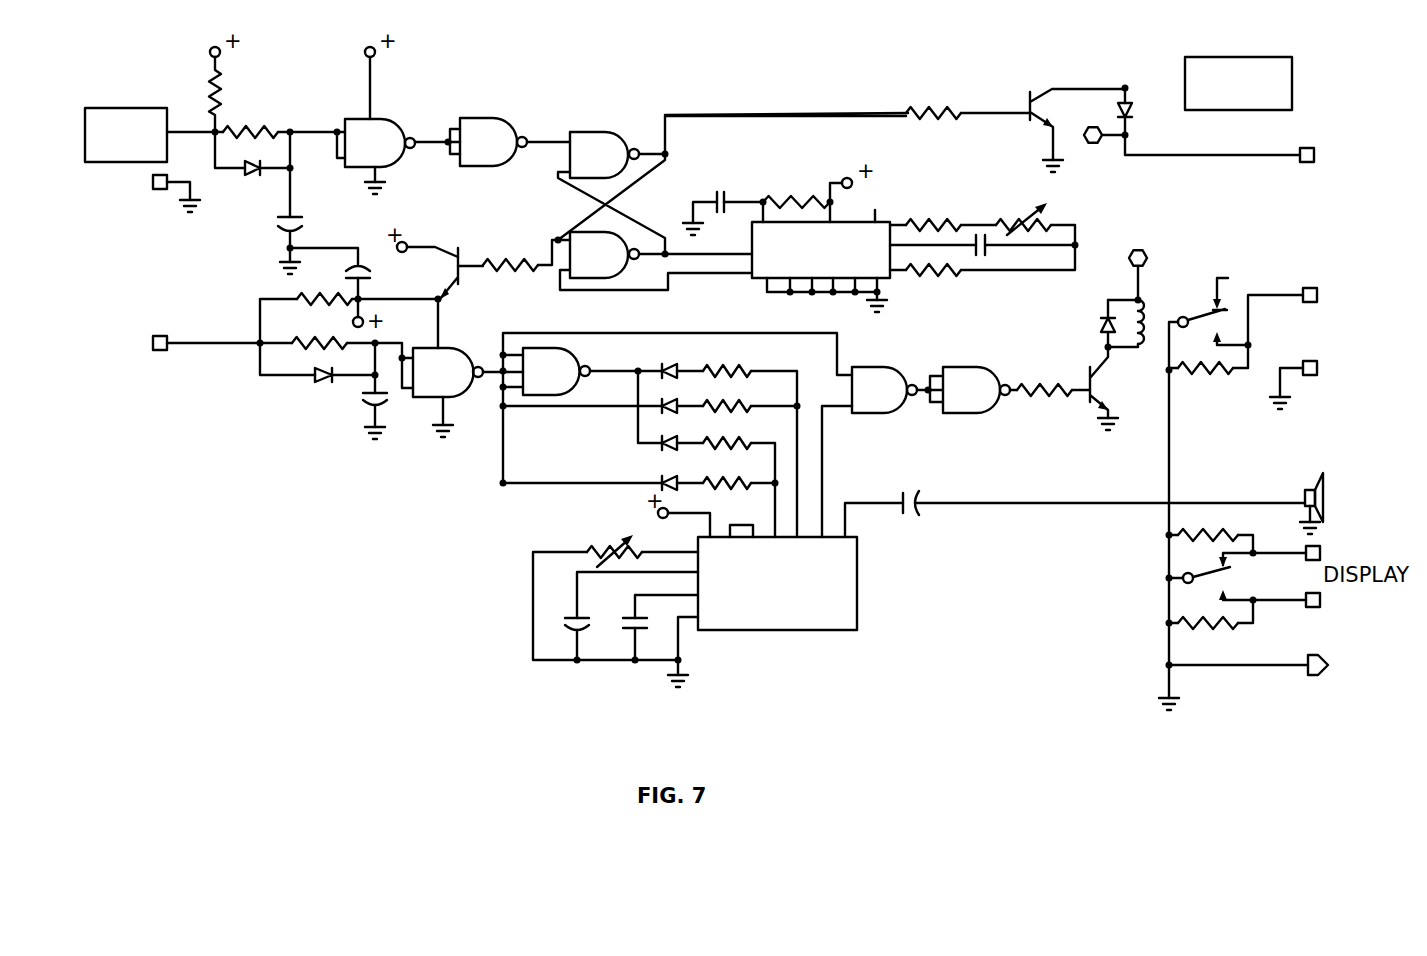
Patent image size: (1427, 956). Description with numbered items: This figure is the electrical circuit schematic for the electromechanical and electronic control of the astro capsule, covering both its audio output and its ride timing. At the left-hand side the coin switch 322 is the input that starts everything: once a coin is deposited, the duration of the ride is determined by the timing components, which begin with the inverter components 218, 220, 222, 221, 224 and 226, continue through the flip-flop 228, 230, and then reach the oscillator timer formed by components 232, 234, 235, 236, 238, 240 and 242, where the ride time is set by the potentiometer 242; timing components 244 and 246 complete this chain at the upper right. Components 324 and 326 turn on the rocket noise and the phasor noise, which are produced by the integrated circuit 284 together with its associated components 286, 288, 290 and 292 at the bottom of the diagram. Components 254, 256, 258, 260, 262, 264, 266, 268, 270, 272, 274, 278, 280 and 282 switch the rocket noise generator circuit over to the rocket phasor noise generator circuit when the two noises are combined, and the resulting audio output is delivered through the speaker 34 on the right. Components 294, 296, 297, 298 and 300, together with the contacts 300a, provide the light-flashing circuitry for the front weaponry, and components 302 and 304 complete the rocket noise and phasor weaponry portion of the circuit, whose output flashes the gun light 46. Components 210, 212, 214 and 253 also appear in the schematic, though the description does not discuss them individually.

The coin switch 322 is at (126, 108).
The inverter component 218 is at (226, 75).
The inverter component 220 is at (233, 125).
The inverter component 222 is at (260, 177).
The inverter component 221 is at (278, 218).
The inverter component 224 is at (383, 120).
The inverter component 226 is at (491, 118).
The flip-flop component 228 is at (601, 131).
The flip-flop component 230 is at (610, 280).
The noise turn-on component 326 is at (462, 252).
The noise turn-on component 324 is at (533, 277).
The coin counter, capacitor and diode 253 is at (372, 273).
The noise switch-over component 254 is at (300, 295).
The noise switch-over component 256 is at (318, 338).
The noise switch-over component 260 is at (318, 378).
The noise switch-over component 258 is at (366, 403).
The noise switch-over component 262 is at (451, 397).
The noise switch-over component 264 is at (574, 360).
The noise switch-over component 266 is at (668, 480).
The noise switch-over component 268 is at (668, 440).
The noise switch-over component 270 is at (668, 364).
The noise switch-over component 272 is at (668, 402).
The noise switch-over component 274 is at (746, 364).
The noise switch-over component 278 is at (746, 401).
The noise switch-over component 280 is at (746, 438).
The noise switch-over component 282 is at (719, 488).
The oscillator timer component 232 is at (722, 190).
The oscillator timer component 234 is at (781, 197).
The oscillator timer component 235 is at (853, 221).
The oscillator timer component 236 is at (913, 221).
The potentiometer 242 is at (1050, 218).
The oscillator timer component 238 is at (990, 250).
The oscillator timer component 240 is at (950, 274).
The timing circuit component 244 is at (917, 105).
The timing circuit component 246 is at (1033, 97).
The light-flashing circuit component 294 is at (893, 413).
The light-flashing circuit component 296 is at (955, 413).
The light-flashing circuit component 298 is at (1036, 380).
The light-flashing circuit component 297 is at (1085, 400).
The noise and weaponry circuit component 302 is at (1100, 325).
The light-flashing circuit component 300 is at (1146, 348).
The light-flashing circuit component 300a is at (1206, 312).
The noise and weaponry circuit component 304 is at (1196, 375).
The gun light 46 is at (1317, 296).
The noise generator component 288 is at (603, 550).
The noise generator component 286 is at (610, 606).
The noise generator component 292 is at (628, 626).
The integrated circuit 284 is at (742, 631).
The noise generator component 290 is at (912, 516).
The resistor 210 is at (1226, 530).
The switch 212 is at (1218, 574).
The resistor 214 is at (1219, 629).
The speaker 34 is at (1351, 486).